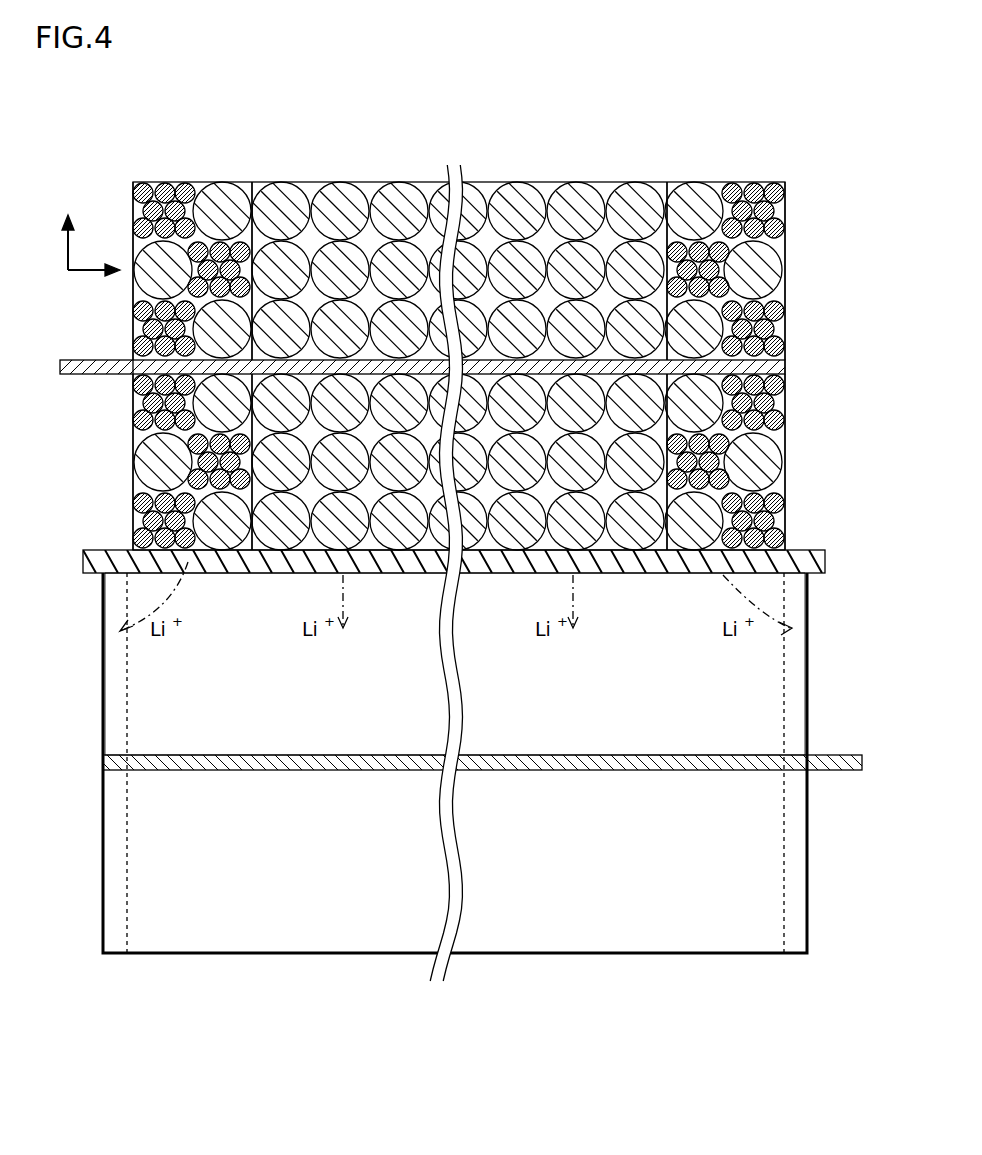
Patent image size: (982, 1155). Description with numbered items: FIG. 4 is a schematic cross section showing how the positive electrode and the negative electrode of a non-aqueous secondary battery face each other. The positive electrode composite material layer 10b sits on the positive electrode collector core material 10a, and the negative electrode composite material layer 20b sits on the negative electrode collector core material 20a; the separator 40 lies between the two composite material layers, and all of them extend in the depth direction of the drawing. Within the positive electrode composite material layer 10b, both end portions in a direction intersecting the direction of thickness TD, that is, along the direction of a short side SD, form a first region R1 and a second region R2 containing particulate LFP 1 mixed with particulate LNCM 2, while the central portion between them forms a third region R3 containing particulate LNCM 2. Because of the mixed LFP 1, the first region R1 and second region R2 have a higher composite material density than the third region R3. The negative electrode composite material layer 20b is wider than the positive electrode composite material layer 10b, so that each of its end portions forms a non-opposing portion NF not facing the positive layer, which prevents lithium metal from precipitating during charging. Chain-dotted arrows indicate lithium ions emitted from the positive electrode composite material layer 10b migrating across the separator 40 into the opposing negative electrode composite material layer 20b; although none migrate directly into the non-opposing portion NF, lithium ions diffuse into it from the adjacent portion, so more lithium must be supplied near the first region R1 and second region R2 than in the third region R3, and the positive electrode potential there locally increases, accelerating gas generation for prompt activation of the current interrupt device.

The positive electrode composite material layer 10b is at (486, 305).
The positive electrode collector core material 10a is at (785, 365).
The particulate LNCM 2 is at (785, 460).
The particulate LFP 1 is at (785, 518).
The separator 40 is at (807, 563).
The non-opposing portion NF is at (798, 648).
The negative electrode composite material layer 20b is at (763, 710).
The negative electrode collector core material 20a is at (823, 768).
The first region R1 is at (193, 178).
The second region R2 is at (726, 328).
The third region R3 is at (373, 178).
The direction of thickness TD is at (66, 252).
The direction of a short side SD is at (80, 272).